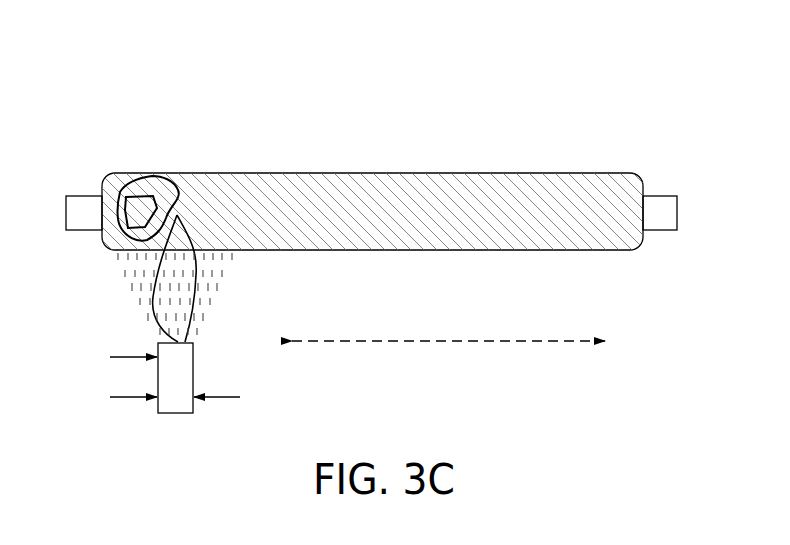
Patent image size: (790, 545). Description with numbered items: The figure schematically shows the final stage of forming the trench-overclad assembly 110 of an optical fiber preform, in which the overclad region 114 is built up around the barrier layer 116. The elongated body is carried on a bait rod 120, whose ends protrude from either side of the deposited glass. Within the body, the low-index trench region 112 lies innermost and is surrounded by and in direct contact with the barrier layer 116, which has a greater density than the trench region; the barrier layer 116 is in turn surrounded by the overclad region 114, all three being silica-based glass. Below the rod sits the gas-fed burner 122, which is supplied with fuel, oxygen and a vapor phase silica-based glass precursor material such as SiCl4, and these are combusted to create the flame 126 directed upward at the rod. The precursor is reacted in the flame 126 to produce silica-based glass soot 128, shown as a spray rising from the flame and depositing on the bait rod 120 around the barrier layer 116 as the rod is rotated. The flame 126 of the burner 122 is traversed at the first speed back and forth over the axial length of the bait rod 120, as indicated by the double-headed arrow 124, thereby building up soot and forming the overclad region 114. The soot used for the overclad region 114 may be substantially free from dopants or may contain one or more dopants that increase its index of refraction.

The trench-overclad assembly 110 is at (377, 145).
The low-index trench region 112 is at (138, 208).
The overclad region 114 is at (428, 172).
The barrier layer 116 is at (162, 190).
The bait rod 120 is at (660, 196).
The gas-fed burner 122 is at (182, 414).
The arrow 124 is at (448, 338).
The flame 126 is at (153, 289).
The silica-based glass soot 128 is at (215, 279).